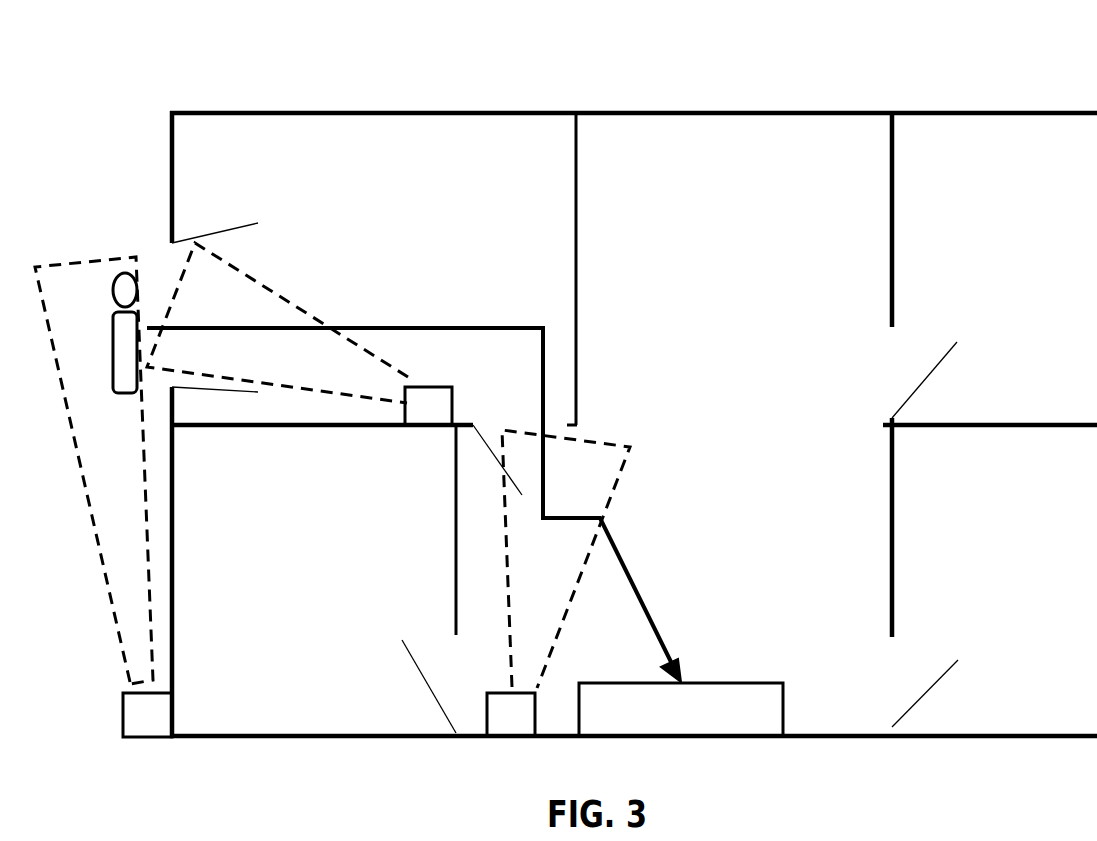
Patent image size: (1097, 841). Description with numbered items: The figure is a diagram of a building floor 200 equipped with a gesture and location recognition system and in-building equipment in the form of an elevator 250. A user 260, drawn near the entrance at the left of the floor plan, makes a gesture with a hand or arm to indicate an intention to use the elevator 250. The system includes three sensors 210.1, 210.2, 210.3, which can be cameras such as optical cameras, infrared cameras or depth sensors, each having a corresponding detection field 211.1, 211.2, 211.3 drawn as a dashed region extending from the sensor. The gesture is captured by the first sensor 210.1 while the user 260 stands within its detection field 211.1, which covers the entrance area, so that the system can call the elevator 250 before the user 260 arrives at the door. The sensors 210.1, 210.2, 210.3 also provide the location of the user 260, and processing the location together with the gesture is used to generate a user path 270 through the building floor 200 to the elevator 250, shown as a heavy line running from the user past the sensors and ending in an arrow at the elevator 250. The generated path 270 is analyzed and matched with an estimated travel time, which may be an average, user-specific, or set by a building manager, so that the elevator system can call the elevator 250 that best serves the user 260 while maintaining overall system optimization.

The building floor 200 is at (982, 72).
The sensor 210.1 is at (172, 713).
The sensor 210.2 is at (425, 427).
The sensor 210.3 is at (512, 738).
The detection field 211.1 is at (147, 470).
The detection field 211.2 is at (262, 272).
The detection field 211.3 is at (627, 458).
The elevator 250 is at (757, 682).
The user 260 is at (127, 270).
The user path 270 is at (545, 333).